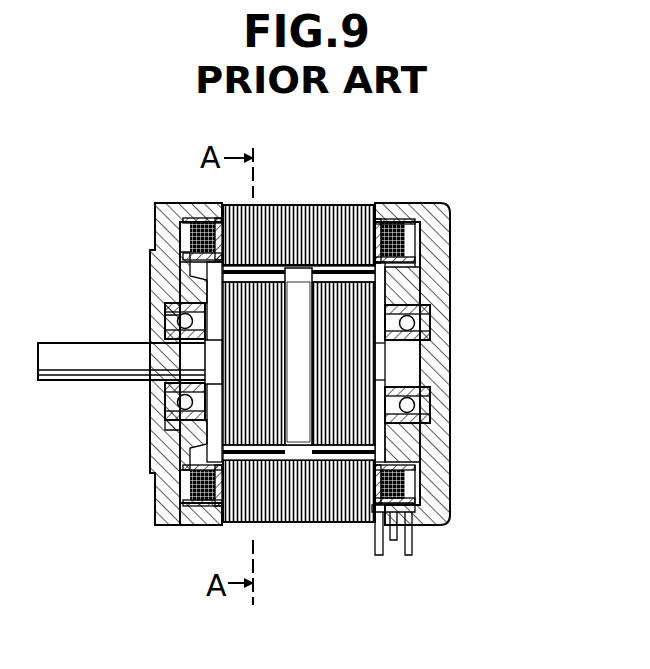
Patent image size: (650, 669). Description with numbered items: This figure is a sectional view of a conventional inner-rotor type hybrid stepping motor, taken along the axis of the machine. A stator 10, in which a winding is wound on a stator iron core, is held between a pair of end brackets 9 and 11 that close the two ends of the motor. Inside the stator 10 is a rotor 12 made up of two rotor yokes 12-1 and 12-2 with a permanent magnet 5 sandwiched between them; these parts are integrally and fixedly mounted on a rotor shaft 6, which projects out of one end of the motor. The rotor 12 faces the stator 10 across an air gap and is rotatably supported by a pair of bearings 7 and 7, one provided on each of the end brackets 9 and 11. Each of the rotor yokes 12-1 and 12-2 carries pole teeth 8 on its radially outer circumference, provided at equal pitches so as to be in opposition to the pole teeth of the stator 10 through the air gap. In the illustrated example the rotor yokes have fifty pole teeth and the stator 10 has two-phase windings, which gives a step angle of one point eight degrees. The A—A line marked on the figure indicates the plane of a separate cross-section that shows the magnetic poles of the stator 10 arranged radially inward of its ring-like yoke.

The permanent magnet 5 is at (297, 445).
The rotor shaft 6 is at (98, 382).
The bearing 7 is at (168, 296).
The pole teeth 8 is at (264, 478).
The end bracket 9 is at (183, 204).
The stator 10 is at (294, 198).
The end bracket 11 is at (410, 204).
The rotor 12 is at (314, 372).
The rotor yoke 12-1 is at (273, 463).
The rotor yoke 12-2 is at (350, 417).